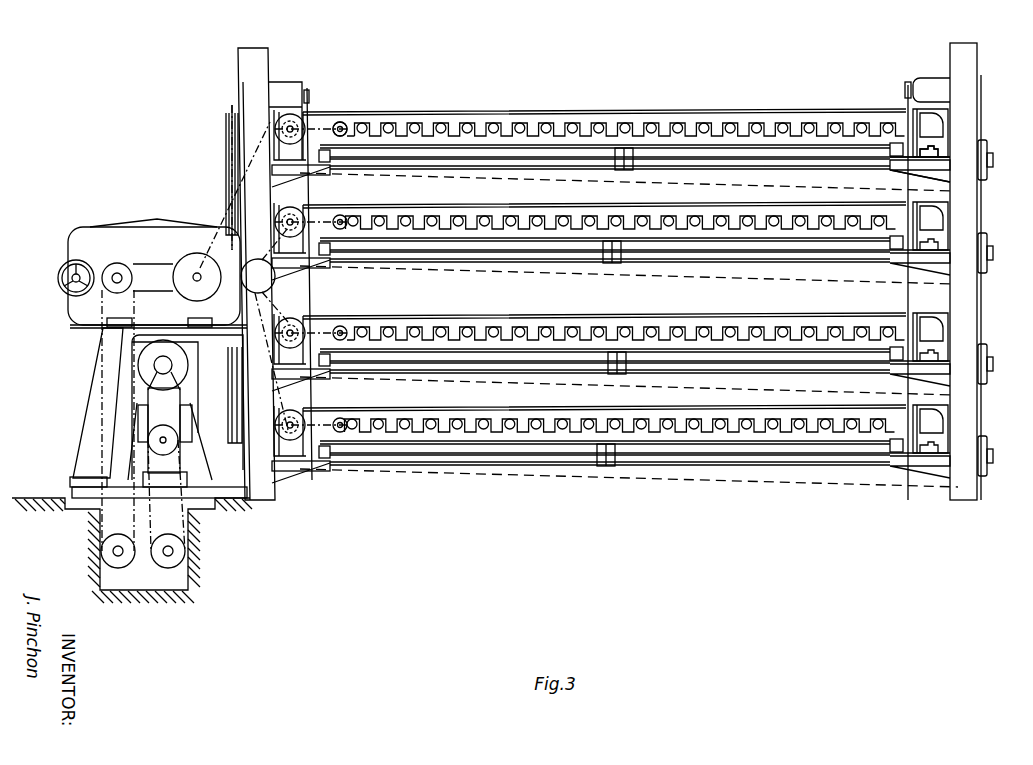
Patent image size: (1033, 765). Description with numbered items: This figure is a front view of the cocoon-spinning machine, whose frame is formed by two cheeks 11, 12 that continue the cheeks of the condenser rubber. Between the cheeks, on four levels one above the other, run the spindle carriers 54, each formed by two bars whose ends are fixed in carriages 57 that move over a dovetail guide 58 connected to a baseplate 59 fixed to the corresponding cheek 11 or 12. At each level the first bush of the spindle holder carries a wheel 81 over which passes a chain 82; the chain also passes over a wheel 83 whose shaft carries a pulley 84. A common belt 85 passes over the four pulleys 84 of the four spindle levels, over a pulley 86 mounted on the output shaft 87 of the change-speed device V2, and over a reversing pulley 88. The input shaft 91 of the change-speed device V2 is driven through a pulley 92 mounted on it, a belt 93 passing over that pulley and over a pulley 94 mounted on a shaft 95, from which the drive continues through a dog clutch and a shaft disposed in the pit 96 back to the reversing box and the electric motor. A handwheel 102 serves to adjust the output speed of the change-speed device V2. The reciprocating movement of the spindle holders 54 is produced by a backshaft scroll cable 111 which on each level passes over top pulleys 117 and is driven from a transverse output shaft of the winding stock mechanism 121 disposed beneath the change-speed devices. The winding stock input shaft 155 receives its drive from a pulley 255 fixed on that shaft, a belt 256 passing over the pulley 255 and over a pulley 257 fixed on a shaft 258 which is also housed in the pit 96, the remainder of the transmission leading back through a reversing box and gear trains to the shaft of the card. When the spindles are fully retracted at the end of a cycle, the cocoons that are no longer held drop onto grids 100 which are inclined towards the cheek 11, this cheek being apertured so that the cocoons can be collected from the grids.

The cheek 11 is at (973, 58).
The cheek 12 is at (257, 55).
The spindle carrier 54 is at (808, 126).
The carriage 57 is at (933, 128).
The dovetail guide 58 is at (930, 148).
The baseplate 59 is at (948, 177).
The wheel 81 is at (344, 124).
The chain 82 is at (322, 122).
The wheel 83 is at (316, 121).
The pulley 84 is at (287, 141).
The common belt 85 is at (204, 226).
The pulley 86 is at (204, 256).
The output shaft 87 is at (190, 274).
The reversing pulley 88 is at (277, 288).
The input shaft 91 is at (115, 268).
The pulley 92 is at (77, 240).
The change-speed device V2 is at (122, 240).
The belt 93 is at (100, 341).
The pulley 94 is at (100, 532).
The shaft 95 is at (114, 549).
The pit 96 is at (142, 587).
The grids 100 is at (551, 176).
The handwheel 102 is at (58, 272).
The backshaft scroll cable 111 is at (312, 188).
The top pulley 117 is at (309, 90).
The winding stock mechanism 121 is at (120, 388).
The winding stock input shaft 155 is at (160, 438).
The pulley 255 is at (157, 456).
The belt 256 is at (153, 517).
The pulley 257 is at (177, 532).
The shaft 258 is at (170, 552).